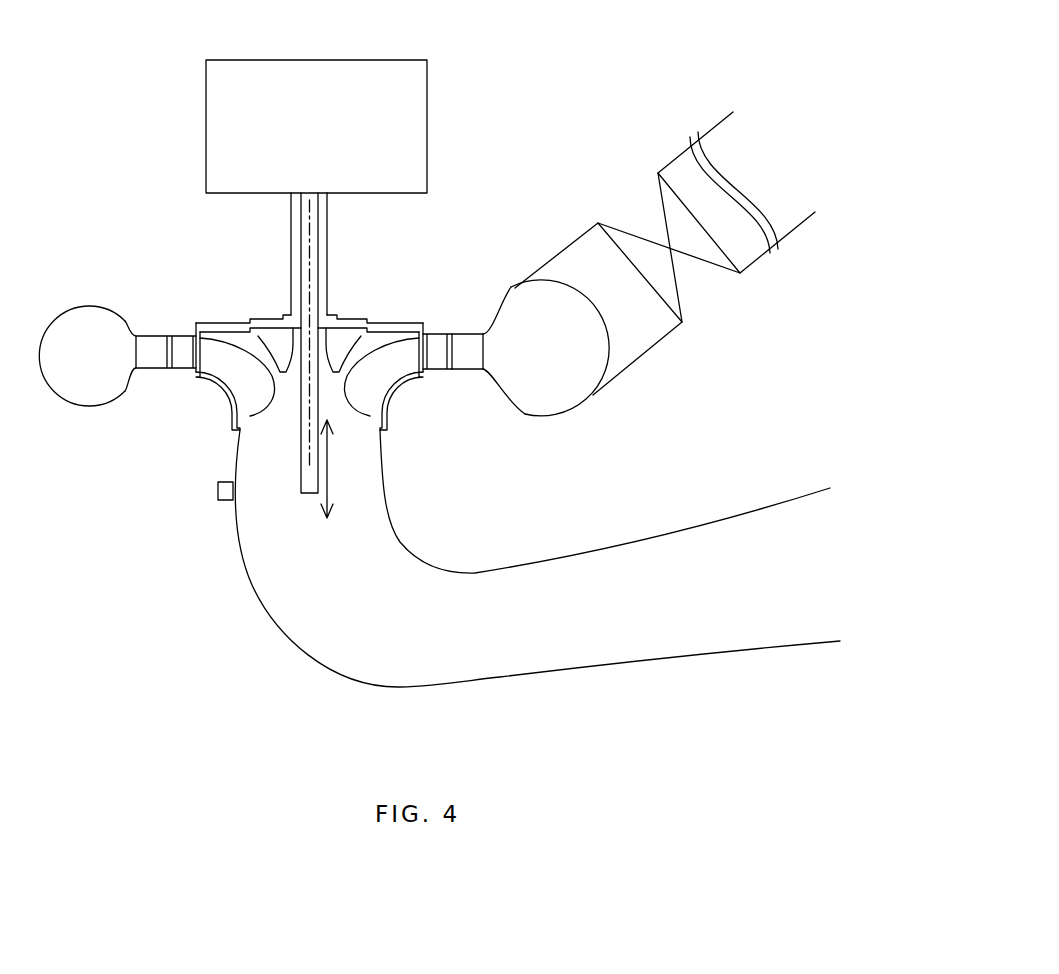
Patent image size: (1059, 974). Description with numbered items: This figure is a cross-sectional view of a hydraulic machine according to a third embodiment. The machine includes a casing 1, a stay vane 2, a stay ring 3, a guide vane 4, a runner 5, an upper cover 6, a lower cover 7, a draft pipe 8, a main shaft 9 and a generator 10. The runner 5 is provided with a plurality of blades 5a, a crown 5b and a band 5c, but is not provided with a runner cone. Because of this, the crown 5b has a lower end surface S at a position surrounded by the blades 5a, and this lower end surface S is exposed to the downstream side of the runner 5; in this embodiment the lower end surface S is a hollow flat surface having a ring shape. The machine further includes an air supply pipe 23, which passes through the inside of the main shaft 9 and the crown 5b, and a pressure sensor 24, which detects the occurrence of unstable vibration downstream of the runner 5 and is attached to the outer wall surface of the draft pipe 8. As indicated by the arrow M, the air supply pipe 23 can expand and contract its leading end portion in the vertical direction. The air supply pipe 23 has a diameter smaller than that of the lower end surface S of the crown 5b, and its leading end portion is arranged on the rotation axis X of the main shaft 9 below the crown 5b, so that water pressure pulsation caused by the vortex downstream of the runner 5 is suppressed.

The casing 1 is at (520, 307).
The stay vane 2 is at (467, 352).
The stay ring 3 is at (465, 333).
The guide vane 4 is at (436, 355).
The runner 5 is at (340, 333).
The blades 5a is at (230, 366).
The crown 5b is at (220, 333).
The band 5c is at (228, 397).
The upper cover 6 is at (384, 333).
The lower cover 7 is at (403, 390).
The draft pipe 8 is at (383, 542).
The main shaft 9 is at (328, 222).
The generator 10 is at (428, 124).
The air supply pipe 23 is at (301, 484).
The pressure sensor 24 is at (218, 489).
The lower end surface S is at (283, 348).
The arrow M is at (337, 469).
The rotation axis X is at (309, 232).